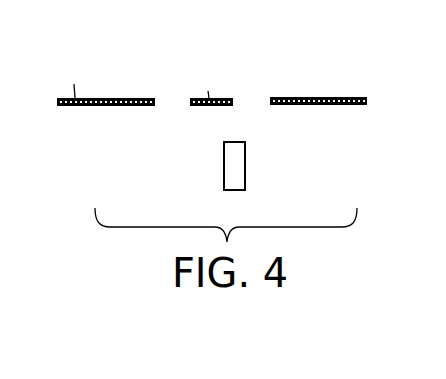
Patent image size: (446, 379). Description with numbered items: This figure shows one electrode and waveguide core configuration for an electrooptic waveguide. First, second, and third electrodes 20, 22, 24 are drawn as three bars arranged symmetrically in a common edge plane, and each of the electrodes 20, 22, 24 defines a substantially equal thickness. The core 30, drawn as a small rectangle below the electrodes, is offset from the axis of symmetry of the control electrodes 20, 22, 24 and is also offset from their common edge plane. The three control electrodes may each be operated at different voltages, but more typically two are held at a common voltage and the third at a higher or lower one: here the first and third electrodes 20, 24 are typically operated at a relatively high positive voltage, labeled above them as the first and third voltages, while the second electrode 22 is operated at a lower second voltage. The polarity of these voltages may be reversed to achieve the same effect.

The first electrode 20 is at (82, 107).
The second electrode 22 is at (198, 107).
The third electrode 24 is at (357, 96).
The core 30 is at (236, 178).